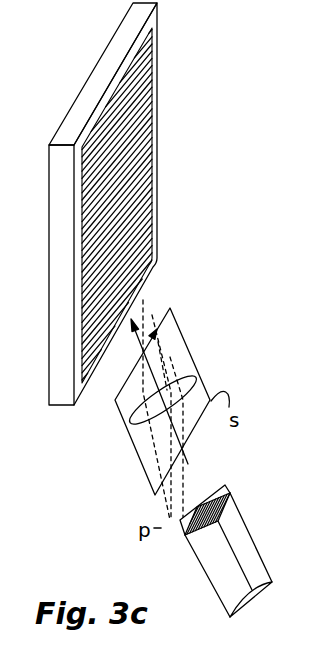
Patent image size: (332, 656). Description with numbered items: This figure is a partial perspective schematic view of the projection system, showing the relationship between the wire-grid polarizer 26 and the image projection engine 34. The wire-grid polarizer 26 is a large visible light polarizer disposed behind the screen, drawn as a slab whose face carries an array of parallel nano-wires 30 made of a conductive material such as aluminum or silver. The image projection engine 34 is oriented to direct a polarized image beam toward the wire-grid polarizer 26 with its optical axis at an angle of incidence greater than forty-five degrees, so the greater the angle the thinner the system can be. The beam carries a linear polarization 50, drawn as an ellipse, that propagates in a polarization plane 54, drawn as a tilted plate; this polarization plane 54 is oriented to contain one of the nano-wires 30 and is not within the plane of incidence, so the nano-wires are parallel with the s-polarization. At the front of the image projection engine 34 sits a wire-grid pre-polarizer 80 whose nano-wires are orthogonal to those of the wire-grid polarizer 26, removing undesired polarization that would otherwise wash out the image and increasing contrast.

The wire-grid polarizer 26 is at (57, 406).
The nano-wires 30 is at (153, 262).
The polarization plane 54 is at (171, 308).
The linear polarization 50 is at (198, 376).
The wire-grid pre-polarizer 80 is at (232, 494).
The image projection engine 34 is at (263, 560).